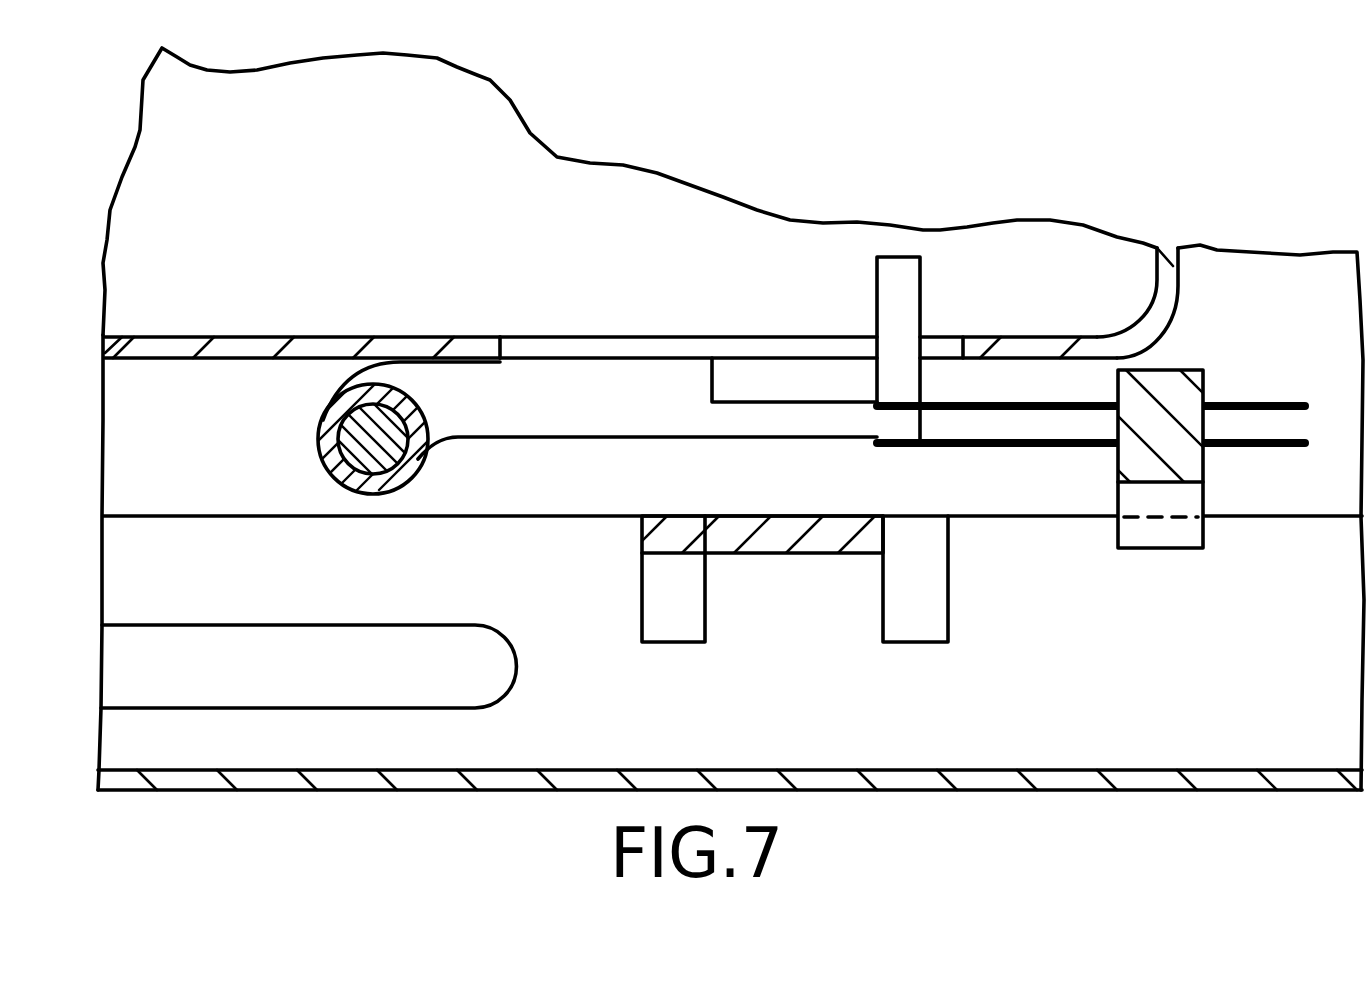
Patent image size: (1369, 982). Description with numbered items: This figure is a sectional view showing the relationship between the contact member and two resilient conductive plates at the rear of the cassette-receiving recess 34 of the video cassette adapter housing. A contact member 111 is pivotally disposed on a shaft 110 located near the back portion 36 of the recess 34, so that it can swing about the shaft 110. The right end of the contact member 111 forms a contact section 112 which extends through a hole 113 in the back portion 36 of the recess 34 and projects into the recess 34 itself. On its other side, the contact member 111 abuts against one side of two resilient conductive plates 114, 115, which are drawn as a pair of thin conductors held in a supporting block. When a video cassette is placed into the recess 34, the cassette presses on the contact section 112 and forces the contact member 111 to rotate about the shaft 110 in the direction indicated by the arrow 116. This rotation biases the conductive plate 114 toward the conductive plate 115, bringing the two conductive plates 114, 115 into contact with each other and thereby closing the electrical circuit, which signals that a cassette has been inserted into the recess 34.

The recess 34 is at (452, 160).
The back portion of the recess 36 is at (315, 335).
The shaft 110 is at (320, 434).
The contact member 111 is at (660, 393).
The contact section 112 is at (921, 287).
The hole 113 is at (578, 336).
The resilient conductive plate 114 is at (1045, 400).
The resilient conductive plate 115 is at (1060, 448).
The arrow 116 is at (877, 183).